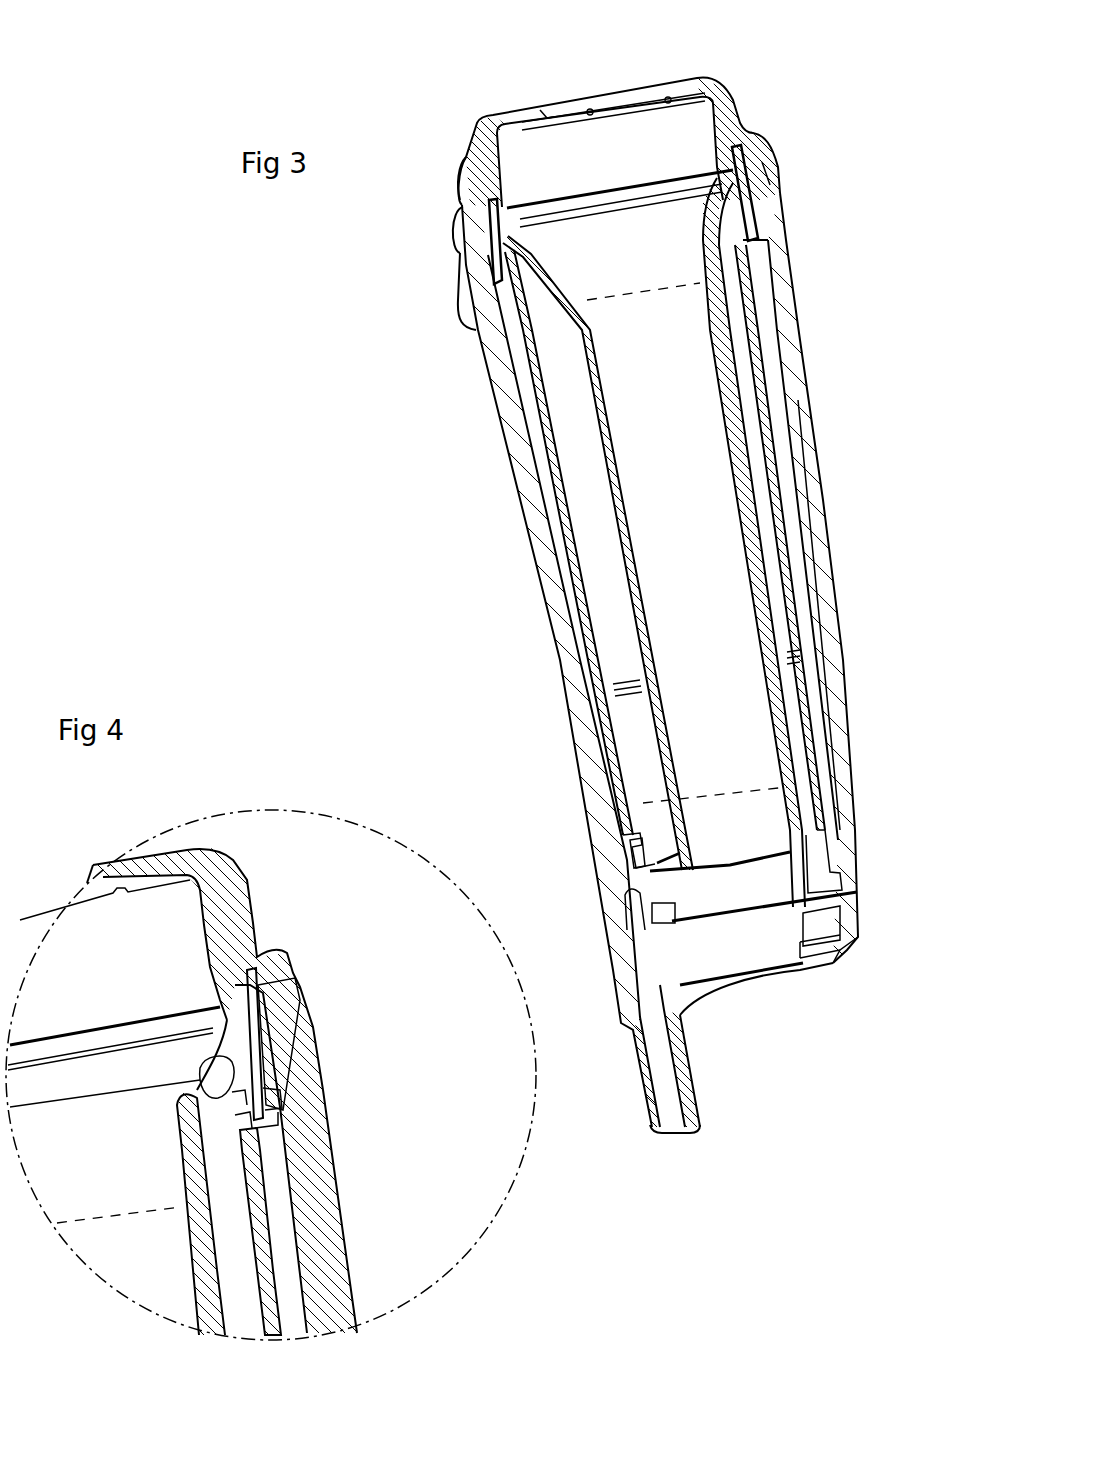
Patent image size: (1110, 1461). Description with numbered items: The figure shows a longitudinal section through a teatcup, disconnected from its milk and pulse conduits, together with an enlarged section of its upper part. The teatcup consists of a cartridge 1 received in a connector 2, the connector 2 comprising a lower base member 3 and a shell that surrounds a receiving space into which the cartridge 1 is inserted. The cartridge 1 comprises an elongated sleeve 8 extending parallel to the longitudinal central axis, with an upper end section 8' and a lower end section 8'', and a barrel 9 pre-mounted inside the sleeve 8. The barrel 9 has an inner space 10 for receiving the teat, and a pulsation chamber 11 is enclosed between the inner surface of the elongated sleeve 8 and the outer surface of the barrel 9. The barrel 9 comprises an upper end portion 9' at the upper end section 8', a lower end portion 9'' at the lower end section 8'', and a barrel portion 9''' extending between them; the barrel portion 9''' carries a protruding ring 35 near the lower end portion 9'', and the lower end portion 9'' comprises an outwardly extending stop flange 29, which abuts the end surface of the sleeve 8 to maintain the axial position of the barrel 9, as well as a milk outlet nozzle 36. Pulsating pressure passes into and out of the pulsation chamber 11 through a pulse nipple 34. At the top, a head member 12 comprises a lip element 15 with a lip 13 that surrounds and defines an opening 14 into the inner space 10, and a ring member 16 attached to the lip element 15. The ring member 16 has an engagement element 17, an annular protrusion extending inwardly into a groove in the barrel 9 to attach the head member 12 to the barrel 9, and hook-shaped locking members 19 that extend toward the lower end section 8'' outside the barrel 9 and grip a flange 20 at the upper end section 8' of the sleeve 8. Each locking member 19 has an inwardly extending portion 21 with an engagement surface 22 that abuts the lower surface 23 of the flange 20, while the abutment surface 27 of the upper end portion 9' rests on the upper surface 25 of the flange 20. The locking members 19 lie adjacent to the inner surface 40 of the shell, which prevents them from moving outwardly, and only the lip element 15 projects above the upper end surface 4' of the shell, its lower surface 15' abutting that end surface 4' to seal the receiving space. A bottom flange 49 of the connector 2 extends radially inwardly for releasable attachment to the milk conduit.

In FIG. 3, the cartridge 1 is at (537, 444).
In FIG. 3, the connector 2 is at (512, 502).
In FIG. 3, the lower base member 3 is at (542, 566).
In FIG. 3, the upper end surface of the shell 4' is at (428, 177).
In FIG. 3, the elongated sleeve 8 is at (846, 531).
In FIG. 3, the upper end section 8' is at (432, 296).
In FIG. 3, the lower end section 8'' is at (863, 863).
In FIG. 3, the barrel 9 is at (696, 542).
In FIG. 3, the upper end portion 9' is at (445, 241).
In FIG. 3, the lower end portion 9'' is at (857, 943).
In FIG. 3, the barrel portion 9''' is at (847, 594).
In FIG. 3, the inner space 10 is at (645, 407).
In FIG. 4, the inner space 10 is at (43, 1020).
In FIG. 3, the pulsation chamber 11 is at (557, 411).
In FIG. 4, the pulsation chamber 11 is at (213, 1245).
In FIG. 3, the head member 12 is at (738, 72).
In FIG. 4, the head member 12 is at (255, 858).
In FIG. 3, the lip 13 is at (555, 112).
In FIG. 3, the opening 14 is at (595, 105).
In FIG. 3, the lip element 15 is at (784, 90).
In FIG. 4, the lip element 15 is at (305, 886).
In FIG. 3, the lower surface of the lip element 15' is at (425, 230).
In FIG. 3, the ring member 16 is at (765, 165).
In FIG. 4, the ring member 16 is at (264, 957).
In FIG. 4, the engagement element 17 is at (252, 1023).
In FIG. 3, the locking members 19 is at (765, 234).
In FIG. 4, the locking members 19 is at (268, 1093).
In FIG. 3, the flange 20 is at (760, 207).
In FIG. 4, the flange 20 is at (265, 1055).
In FIG. 4, the inwardly extending portion 21 is at (255, 1137).
In FIG. 4, the engagement surface 22 is at (242, 1120).
In FIG. 4, the lower surface 23 is at (258, 1140).
In FIG. 4, the upper surface 25 is at (240, 1060).
In FIG. 4, the abutment surface 27 is at (235, 1097).
In FIG. 3, the stop flange 29 is at (792, 923).
In FIG. 3, the pulse nipple 34 is at (647, 1110).
In FIG. 3, the protruding ring 35 is at (645, 867).
In FIG. 3, the milk outlet nozzle 36 is at (800, 968).
In FIG. 3, the inner surface of the shell 40 is at (755, 268).
In FIG. 3, the bottom flange 49 is at (830, 950).